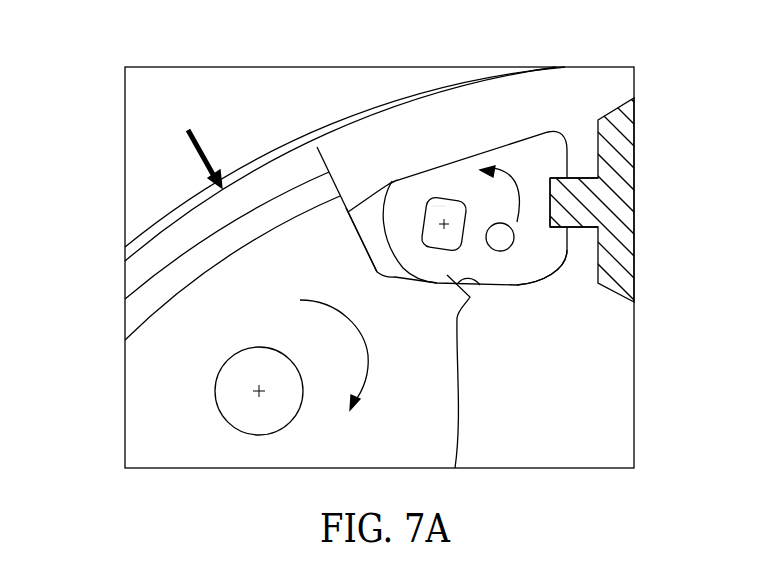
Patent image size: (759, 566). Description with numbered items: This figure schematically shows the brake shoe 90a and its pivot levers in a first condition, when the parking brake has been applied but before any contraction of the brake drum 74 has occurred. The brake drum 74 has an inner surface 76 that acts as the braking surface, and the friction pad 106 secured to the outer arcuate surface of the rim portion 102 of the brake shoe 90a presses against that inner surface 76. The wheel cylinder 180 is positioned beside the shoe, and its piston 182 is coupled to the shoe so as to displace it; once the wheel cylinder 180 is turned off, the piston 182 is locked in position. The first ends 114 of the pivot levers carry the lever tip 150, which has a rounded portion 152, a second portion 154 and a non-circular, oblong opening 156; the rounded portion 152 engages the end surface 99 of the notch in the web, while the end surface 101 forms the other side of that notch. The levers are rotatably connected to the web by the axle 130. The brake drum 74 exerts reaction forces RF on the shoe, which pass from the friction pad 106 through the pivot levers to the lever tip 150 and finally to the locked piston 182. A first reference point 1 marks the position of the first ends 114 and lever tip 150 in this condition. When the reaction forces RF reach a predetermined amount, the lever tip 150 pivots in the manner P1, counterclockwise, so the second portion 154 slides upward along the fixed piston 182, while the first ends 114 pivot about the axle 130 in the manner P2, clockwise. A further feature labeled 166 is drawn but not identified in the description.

The brake shoe 90a is at (104, 400).
The brake drum 74 is at (292, 146).
The inner surface 76 is at (448, 97).
The friction pad 106 is at (125, 275).
The rim portion 102 is at (125, 317).
The first ends of the pivot levers 114 is at (356, 190).
The end surface 101 is at (345, 209).
The lever tip 150 is at (532, 120).
The end surface 99 is at (392, 272).
The second portion 154 is at (544, 268).
The non-circular opening 156 is at (455, 186).
The pivot of detent 166 is at (438, 204).
The rounded portion 152 is at (468, 295).
The wheel cylinder 180 is at (620, 125).
The piston 182 is at (560, 194).
The axle 130 is at (267, 357).
The reaction forces RF is at (203, 140).
The pivoting manner of the lever tip P1 is at (508, 173).
The pivoting manner of the first ends P2 is at (370, 355).
The first reference point 1 is at (447, 224).